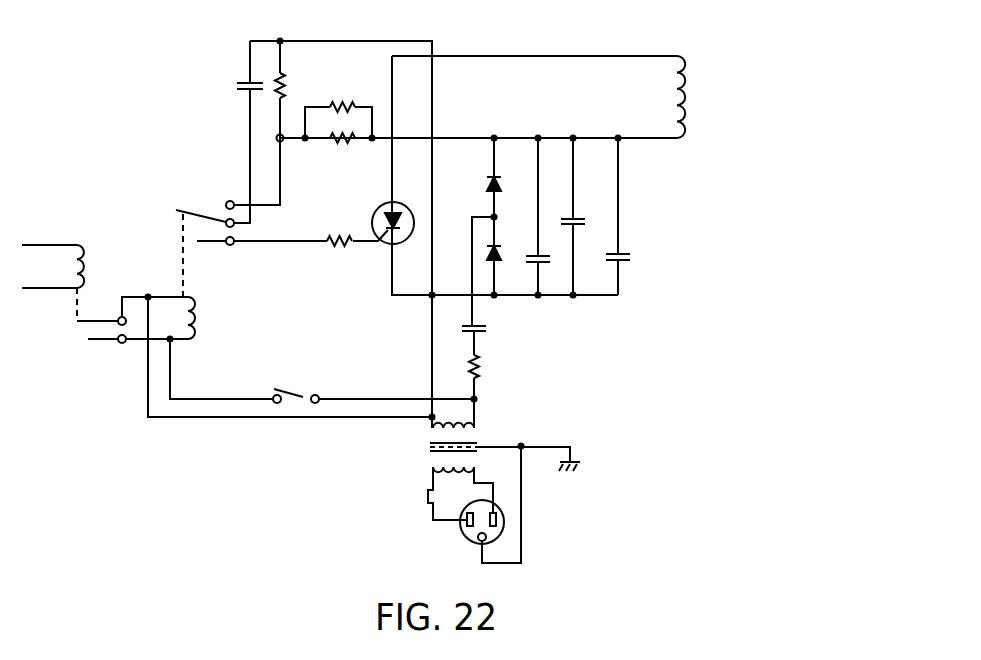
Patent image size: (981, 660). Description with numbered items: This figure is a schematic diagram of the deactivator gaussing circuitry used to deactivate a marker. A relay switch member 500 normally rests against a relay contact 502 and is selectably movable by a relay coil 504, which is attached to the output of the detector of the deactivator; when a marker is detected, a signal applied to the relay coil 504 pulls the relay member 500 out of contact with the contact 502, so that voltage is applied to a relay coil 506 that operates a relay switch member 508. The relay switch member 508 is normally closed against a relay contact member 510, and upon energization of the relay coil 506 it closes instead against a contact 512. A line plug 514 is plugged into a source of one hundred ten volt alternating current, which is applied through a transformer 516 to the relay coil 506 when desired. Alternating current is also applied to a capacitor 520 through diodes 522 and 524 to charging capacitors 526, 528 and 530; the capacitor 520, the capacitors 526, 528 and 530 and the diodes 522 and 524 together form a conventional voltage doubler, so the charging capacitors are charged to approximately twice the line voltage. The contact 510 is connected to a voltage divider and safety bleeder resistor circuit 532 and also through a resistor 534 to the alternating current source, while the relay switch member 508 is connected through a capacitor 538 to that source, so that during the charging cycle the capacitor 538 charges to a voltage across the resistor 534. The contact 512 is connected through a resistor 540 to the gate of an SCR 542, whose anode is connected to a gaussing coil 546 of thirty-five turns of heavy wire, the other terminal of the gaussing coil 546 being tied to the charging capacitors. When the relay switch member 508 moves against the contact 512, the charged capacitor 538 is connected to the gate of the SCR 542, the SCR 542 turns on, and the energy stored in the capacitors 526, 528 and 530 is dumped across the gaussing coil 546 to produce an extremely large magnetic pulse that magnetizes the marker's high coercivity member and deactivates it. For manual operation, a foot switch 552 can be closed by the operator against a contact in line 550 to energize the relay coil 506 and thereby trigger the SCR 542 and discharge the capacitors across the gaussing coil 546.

The relay switch member 500 is at (97, 320).
The relay contact 502 is at (87, 342).
The relay coil 504 is at (84, 256).
The relay coil 506 is at (198, 322).
The relay switch member 508 is at (180, 214).
The relay contact member 510 is at (195, 205).
The contact 512 is at (195, 244).
The line plug 514 is at (465, 537).
The transformer 516 is at (430, 445).
The capacitor 520 is at (486, 331).
The diode 522 is at (488, 182).
The diode 524 is at (498, 257).
The charging capacitor 526 is at (535, 257).
The charging capacitor 528 is at (575, 218).
The charging capacitor 530 is at (621, 252).
The voltage divider and safety bleeder resistor circuit 532 is at (344, 155).
The resistor 534 is at (283, 80).
The capacitor 538 is at (248, 82).
The resistor 540 is at (337, 247).
The SCR 542 is at (372, 223).
The gaussing coil 546 is at (684, 90).
The line 550 is at (230, 392).
The foot switch 552 is at (300, 395).